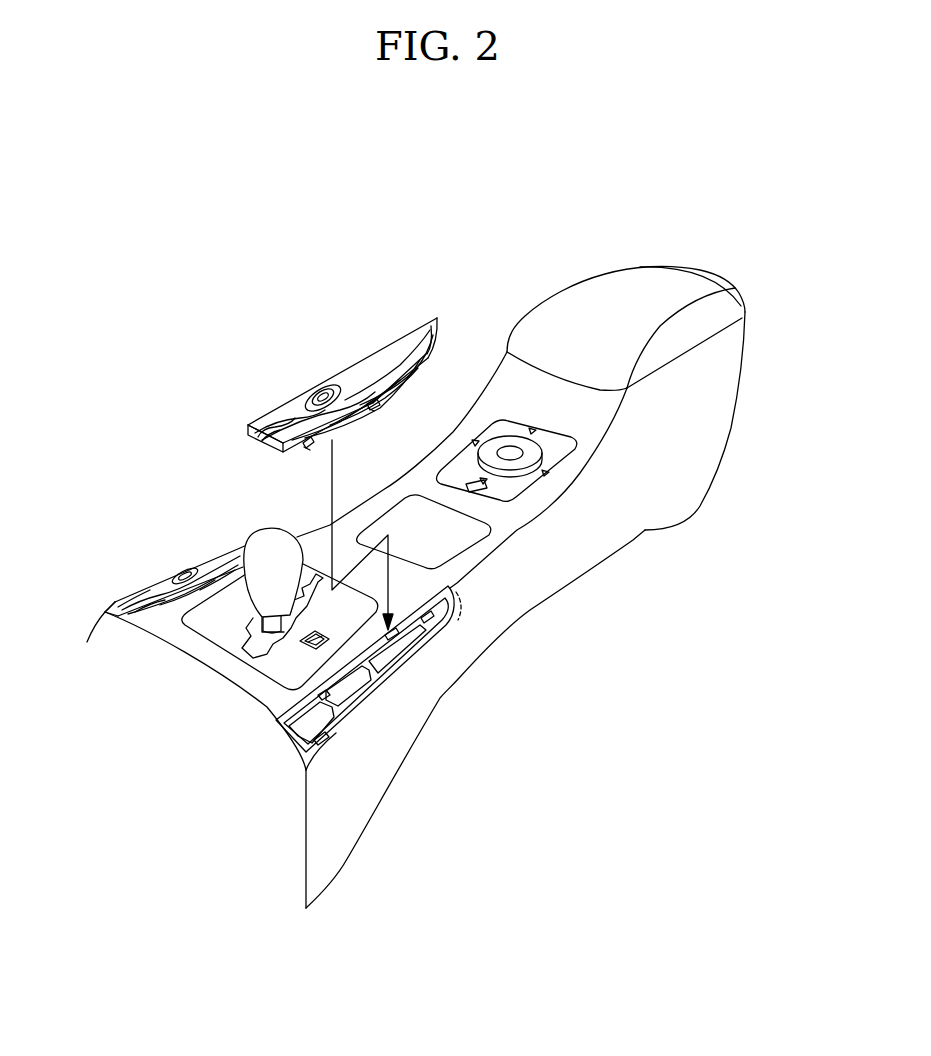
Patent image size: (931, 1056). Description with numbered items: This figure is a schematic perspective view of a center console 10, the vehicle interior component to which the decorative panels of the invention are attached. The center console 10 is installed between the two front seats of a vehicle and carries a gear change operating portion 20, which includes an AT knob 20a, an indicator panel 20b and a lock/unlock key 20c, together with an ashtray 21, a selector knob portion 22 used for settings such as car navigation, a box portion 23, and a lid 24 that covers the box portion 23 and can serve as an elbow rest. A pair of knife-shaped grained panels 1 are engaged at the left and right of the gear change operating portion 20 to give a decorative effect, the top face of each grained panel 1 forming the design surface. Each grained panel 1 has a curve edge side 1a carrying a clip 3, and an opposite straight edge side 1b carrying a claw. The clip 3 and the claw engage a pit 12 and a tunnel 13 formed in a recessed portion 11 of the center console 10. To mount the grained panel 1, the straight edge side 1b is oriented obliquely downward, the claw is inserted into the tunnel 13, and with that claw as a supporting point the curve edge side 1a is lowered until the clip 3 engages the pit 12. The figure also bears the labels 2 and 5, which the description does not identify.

The grained panel 1 is at (298, 447).
The curve edge side 1a is at (432, 350).
The straight edge side 1b is at (385, 352).
The engaging clip 2 is at (378, 403).
The clip 3 is at (317, 456).
The base member of decorative panel 5 is at (257, 421).
The center console 10 is at (606, 598).
The recessed portion 11 is at (354, 693).
The pit 12 is at (438, 628).
The tunnel 13 is at (420, 657).
The gear change operating portion 20 is at (192, 631).
The AT knob 20a is at (260, 540).
The indicator panel 20b is at (237, 658).
The lock/unlock key 20c is at (305, 647).
The ashtray 21 is at (412, 518).
The selector knob portion 22 is at (488, 430).
The box portion 23 is at (710, 367).
The lid 24 is at (593, 322).